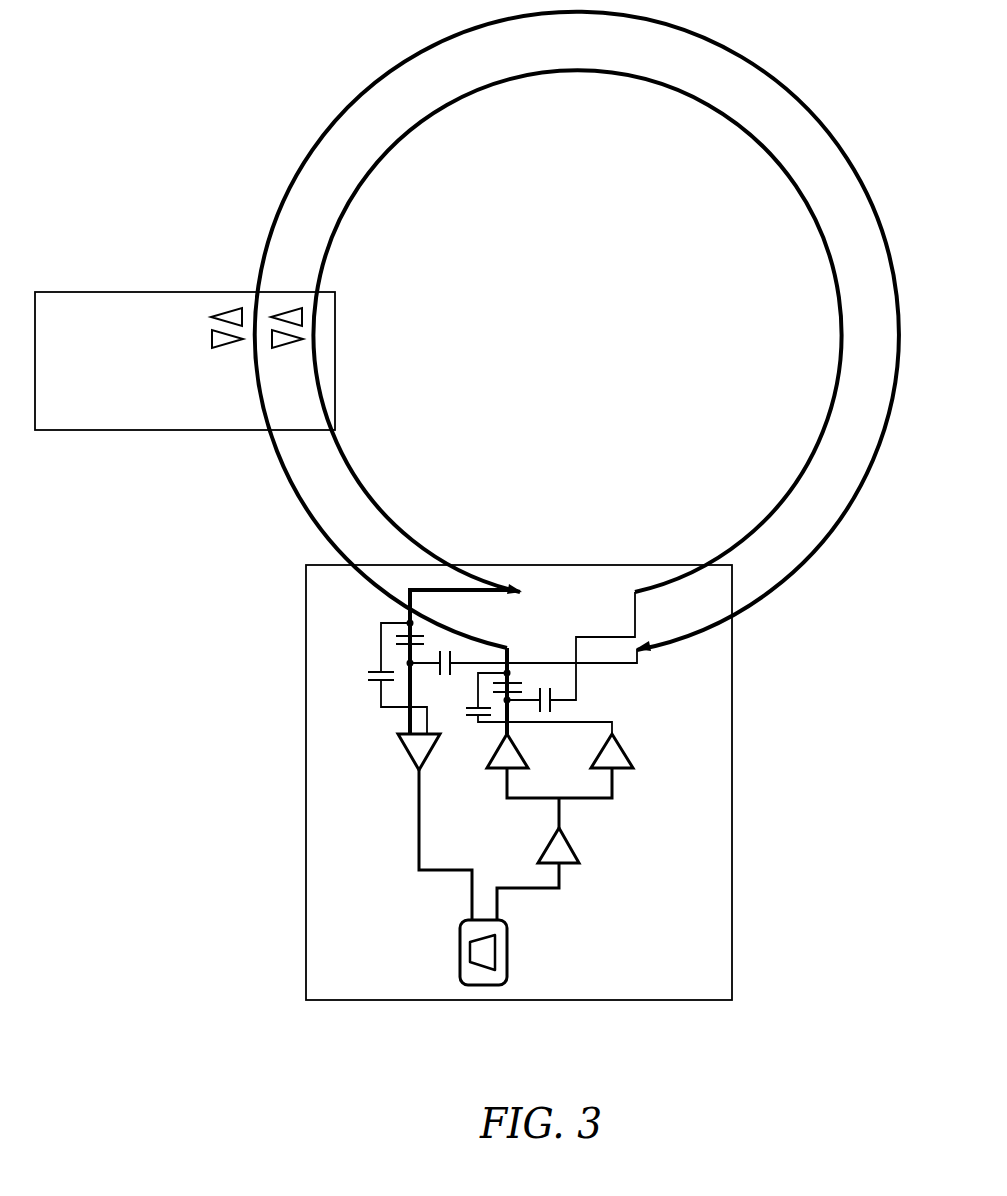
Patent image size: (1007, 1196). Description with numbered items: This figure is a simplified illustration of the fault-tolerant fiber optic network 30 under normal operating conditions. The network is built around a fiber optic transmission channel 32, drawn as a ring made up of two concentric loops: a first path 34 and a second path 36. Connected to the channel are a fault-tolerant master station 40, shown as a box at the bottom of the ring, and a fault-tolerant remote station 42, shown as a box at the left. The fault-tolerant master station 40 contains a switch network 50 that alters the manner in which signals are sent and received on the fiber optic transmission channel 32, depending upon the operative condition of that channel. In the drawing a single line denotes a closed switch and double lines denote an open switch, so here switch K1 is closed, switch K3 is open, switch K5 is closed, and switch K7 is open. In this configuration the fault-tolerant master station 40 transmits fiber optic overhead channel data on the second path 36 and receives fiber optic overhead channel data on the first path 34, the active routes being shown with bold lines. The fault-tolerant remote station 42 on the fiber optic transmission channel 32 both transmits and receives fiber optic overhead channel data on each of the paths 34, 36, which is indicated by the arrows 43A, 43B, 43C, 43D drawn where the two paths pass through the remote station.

The fault-tolerant fiber optic network 30 is at (306, 73).
The fiber optic transmission channel 32 is at (870, 183).
The first path 34 is at (837, 301).
The second path 36 is at (855, 503).
The fault-tolerant master station 40 is at (734, 748).
The fault-tolerant remote station 42 is at (150, 291).
The arrow 43A is at (232, 348).
The arrow 43B is at (232, 307).
The arrow 43C is at (292, 348).
The arrow 43D is at (288, 311).
The switch network 50 is at (380, 722).
The switch K1 is at (406, 662).
The switch K3 is at (372, 684).
The switch K5 is at (503, 698).
The switch K7 is at (466, 716).